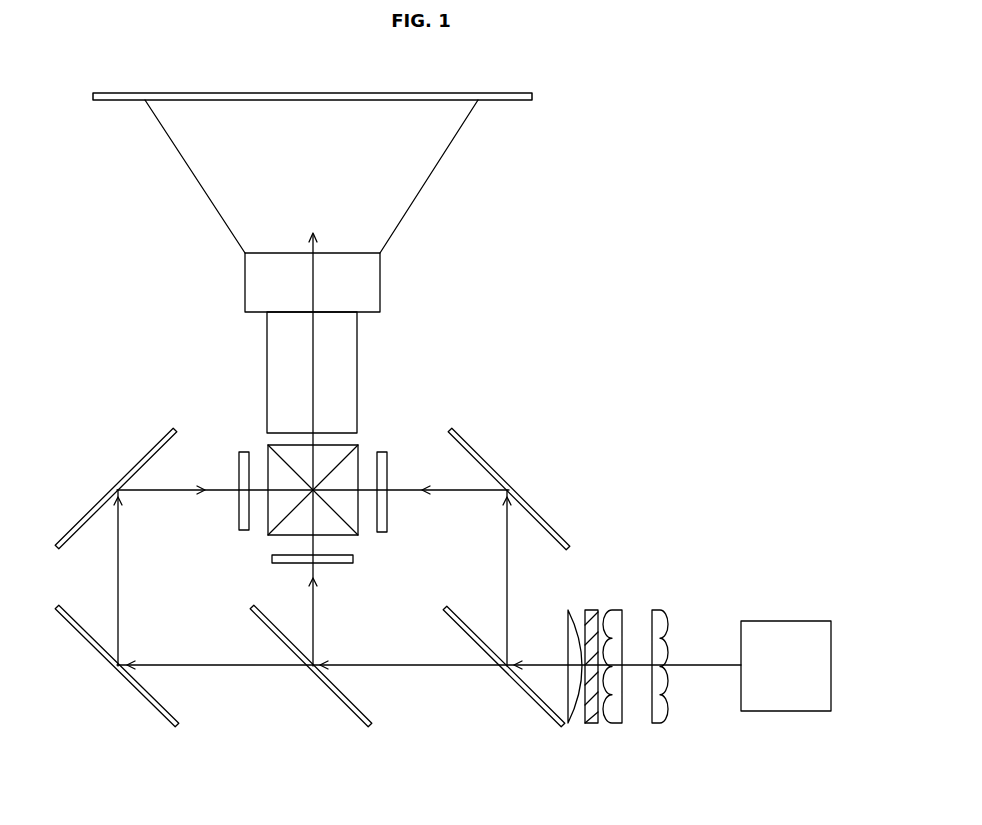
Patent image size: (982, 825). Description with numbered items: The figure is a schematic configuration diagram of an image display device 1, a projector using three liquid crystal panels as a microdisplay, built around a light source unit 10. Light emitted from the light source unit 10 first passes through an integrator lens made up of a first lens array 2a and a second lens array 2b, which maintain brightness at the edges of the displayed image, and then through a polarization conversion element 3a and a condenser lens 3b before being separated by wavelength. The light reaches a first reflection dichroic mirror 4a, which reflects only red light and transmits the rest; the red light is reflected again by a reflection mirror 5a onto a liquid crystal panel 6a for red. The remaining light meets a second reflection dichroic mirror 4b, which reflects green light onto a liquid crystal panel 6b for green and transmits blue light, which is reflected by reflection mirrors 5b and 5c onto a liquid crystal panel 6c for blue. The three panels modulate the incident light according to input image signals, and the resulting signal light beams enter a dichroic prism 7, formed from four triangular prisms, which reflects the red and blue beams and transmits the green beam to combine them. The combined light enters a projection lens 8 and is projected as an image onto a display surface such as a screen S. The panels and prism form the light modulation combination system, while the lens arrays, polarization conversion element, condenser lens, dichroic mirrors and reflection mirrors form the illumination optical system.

The image display device 1 is at (704, 162).
The screen S is at (534, 97).
The projection lens 8 is at (381, 285).
The dichroic prism 7 is at (267, 525).
The liquid crystal panel for red 6a is at (381, 450).
The liquid crystal panel for green 6b is at (356, 559).
The liquid crystal panel for blue 6c is at (243, 450).
The reflection mirror 5a is at (509, 487).
The reflection mirror 5b is at (116, 669).
The reflection mirror 5c is at (116, 487).
The first reflection dichroic mirror 4a is at (505, 669).
The second reflection dichroic mirror 4b is at (311, 669).
The polarization conversion element 3a is at (594, 726).
The condenser lens 3b is at (571, 726).
The first lens array 2a is at (612, 766).
The second lens array 2b is at (616, 726).
The light source unit 10 is at (784, 620).